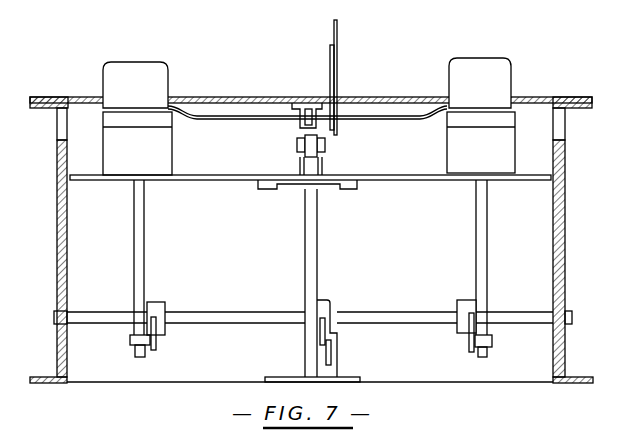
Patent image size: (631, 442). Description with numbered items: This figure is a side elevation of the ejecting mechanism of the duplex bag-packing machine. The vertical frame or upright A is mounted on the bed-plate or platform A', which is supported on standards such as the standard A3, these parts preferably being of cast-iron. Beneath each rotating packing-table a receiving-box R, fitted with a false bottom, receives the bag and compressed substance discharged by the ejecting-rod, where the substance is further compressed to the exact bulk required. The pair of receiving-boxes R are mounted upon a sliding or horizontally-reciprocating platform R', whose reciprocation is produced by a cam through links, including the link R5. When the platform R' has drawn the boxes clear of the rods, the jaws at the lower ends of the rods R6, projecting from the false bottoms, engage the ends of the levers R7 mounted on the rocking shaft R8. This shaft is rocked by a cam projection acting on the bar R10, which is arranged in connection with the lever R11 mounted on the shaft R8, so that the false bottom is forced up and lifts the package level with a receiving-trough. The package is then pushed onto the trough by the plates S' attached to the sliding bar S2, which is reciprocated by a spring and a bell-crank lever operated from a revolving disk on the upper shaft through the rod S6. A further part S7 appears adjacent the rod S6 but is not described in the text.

The bed-plate or platform A' is at (311, 90).
The vertical frame or upright A is at (60, 245).
The standard A3 is at (553, 250).
The plate S' is at (318, 83).
The receiving-box R is at (309, 143).
The sliding bar S2 is at (302, 120).
The rod S6 is at (337, 62).
The switch plate S7 is at (334, 80).
The link R5 is at (318, 147).
The sliding or horizontally-reciprocating platform R' is at (310, 170).
The rocking shaft R8 is at (284, 303).
The rod R6 is at (143, 283).
The lever R7 is at (172, 333).
The lever R11 is at (325, 311).
The bar R10 is at (328, 353).